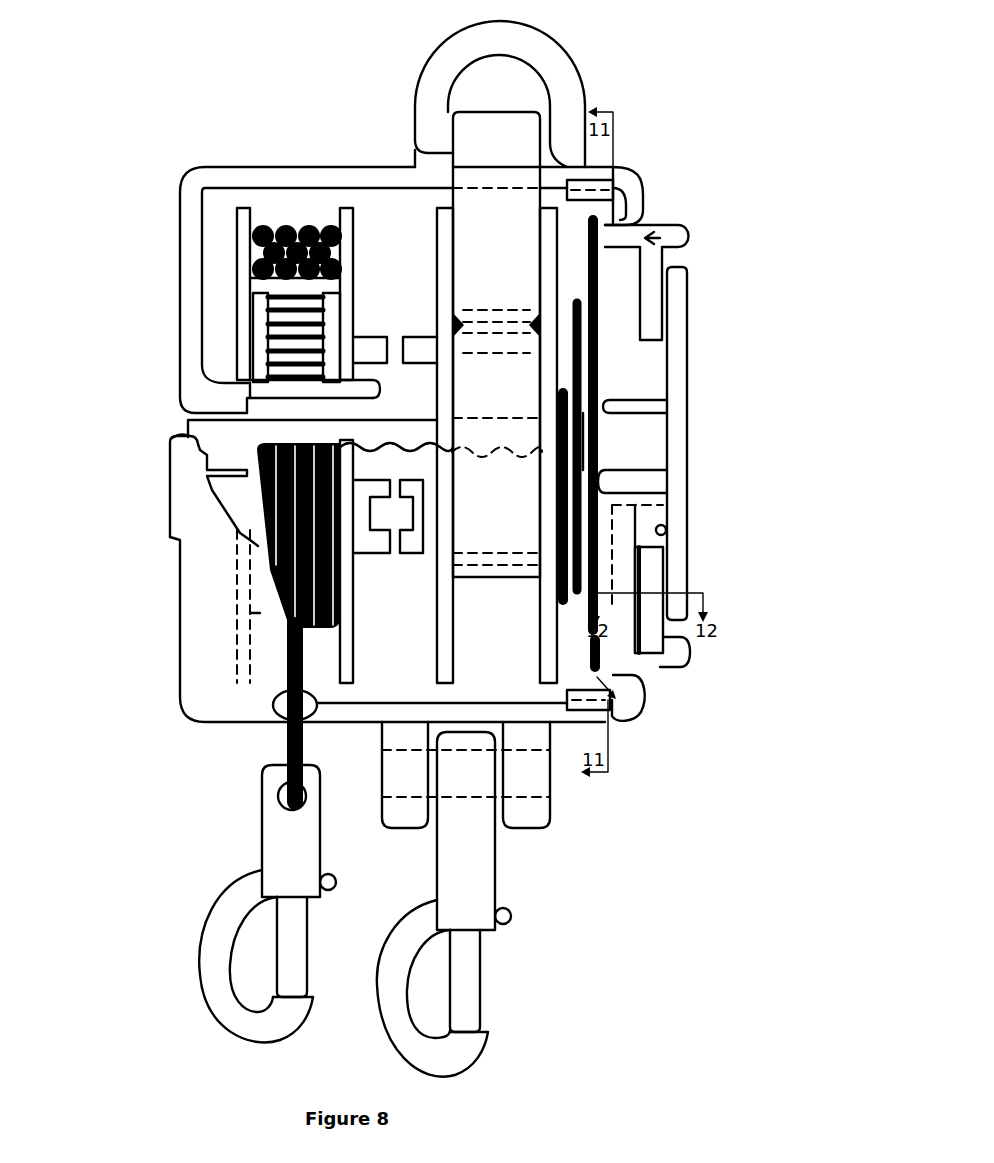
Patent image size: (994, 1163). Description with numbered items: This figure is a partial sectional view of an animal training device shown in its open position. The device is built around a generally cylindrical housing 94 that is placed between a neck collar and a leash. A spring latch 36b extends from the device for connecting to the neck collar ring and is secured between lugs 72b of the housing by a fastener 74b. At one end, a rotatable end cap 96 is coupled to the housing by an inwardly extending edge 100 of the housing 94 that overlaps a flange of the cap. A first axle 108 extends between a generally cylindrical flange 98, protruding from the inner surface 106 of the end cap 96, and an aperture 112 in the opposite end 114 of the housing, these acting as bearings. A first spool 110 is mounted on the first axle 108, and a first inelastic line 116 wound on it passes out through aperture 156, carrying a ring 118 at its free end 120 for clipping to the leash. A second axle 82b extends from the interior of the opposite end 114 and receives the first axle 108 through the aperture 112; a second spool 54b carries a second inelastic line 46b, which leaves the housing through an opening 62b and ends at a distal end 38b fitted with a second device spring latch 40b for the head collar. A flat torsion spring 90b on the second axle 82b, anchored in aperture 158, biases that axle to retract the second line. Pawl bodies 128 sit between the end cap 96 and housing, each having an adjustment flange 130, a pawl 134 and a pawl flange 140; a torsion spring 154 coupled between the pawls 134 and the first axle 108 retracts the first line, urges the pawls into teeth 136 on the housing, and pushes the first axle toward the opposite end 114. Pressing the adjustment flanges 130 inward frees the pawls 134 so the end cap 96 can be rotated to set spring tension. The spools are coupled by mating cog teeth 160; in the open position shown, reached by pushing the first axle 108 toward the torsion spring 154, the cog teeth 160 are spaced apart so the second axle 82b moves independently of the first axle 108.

The ring 118 is at (447, 70).
The aperture 156 is at (427, 172).
The first spool 110 is at (437, 348).
The free end 120 is at (495, 207).
The first inelastic line 116 is at (528, 205).
The housing 94 is at (566, 175).
The inwardly extending edge 100 is at (624, 193).
The adjustment flange 130 is at (684, 234).
The pawl body 128 is at (666, 250).
The end cap 96 is at (678, 307).
The torsion spring 154 is at (602, 377).
The generally cylindrical flange 98 is at (648, 410).
The first axle 108 is at (664, 474).
The inner surface 106 is at (666, 537).
The pawl flange 140 is at (654, 570).
The second inelastic line 46b is at (262, 236).
The second spool 54b is at (262, 283).
The flat torsion spring 90b is at (287, 347).
The second axle 82b is at (293, 388).
The aperture 158 is at (243, 397).
The aperture 112 is at (165, 437).
The opposite end 114 is at (170, 536).
The opening 62b is at (272, 712).
The distal end 38b is at (285, 750).
The second device spring latch 40b is at (293, 855).
The cog teeth 160 is at (417, 517).
The fastener 74b is at (498, 768).
The lugs 72b is at (527, 812).
The spring latch 36b is at (467, 863).
The pawl 134 is at (636, 690).
The teeth 136 is at (612, 727).